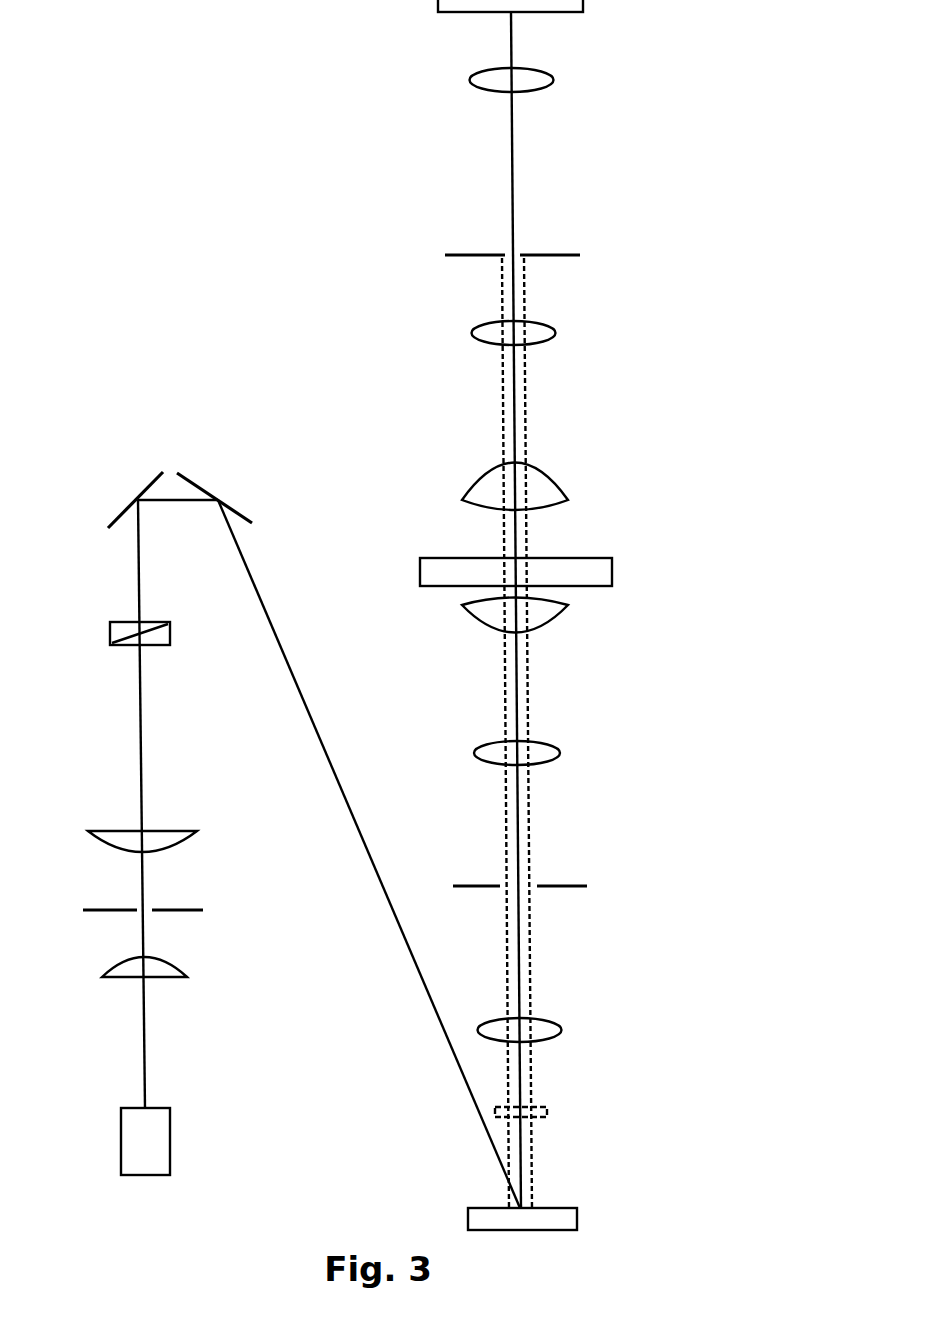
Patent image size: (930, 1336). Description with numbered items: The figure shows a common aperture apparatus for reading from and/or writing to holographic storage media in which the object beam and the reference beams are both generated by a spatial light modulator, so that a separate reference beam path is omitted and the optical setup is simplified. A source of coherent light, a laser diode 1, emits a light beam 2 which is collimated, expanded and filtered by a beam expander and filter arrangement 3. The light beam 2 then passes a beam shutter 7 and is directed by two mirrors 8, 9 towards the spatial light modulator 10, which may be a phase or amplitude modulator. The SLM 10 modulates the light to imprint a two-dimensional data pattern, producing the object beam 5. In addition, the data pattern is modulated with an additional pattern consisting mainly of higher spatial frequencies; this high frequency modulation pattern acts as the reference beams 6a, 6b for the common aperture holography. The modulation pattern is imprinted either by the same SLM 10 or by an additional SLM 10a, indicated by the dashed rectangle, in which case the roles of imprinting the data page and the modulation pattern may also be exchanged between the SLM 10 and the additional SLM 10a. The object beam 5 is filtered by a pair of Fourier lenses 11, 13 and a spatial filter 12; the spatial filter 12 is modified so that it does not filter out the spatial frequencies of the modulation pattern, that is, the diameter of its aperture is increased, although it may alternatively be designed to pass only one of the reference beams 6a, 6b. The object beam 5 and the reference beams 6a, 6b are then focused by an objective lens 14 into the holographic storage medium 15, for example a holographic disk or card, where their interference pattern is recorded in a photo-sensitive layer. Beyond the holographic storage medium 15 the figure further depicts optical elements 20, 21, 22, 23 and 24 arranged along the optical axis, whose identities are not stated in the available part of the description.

The laser diode 1 is at (118, 1140).
The light beam 2 is at (147, 1053).
The beam expander and filter arrangement 3 is at (84, 823).
The object beam 5 is at (517, 835).
The partial reference beam 6a is at (505, 711).
The partial reference beam 6b is at (530, 711).
The beam shutter 7 is at (110, 632).
The mirror 8 is at (130, 496).
The mirror 9 is at (222, 492).
The spatial light modulator 10 is at (468, 1218).
The additional spatial light modulator 10a is at (548, 1112).
The Fourier lens 11 is at (562, 1028).
The spatial filter 12 is at (590, 885).
The Fourier lens 13 is at (561, 755).
The objective lens 14 is at (568, 606).
The holographic storage medium 15 is at (612, 570).
The lens 20 is at (462, 480).
The lens 21 is at (469, 336).
The pinhole aperture 22 is at (441, 258).
The lens 23 is at (470, 84).
The detector 24 is at (437, 11).